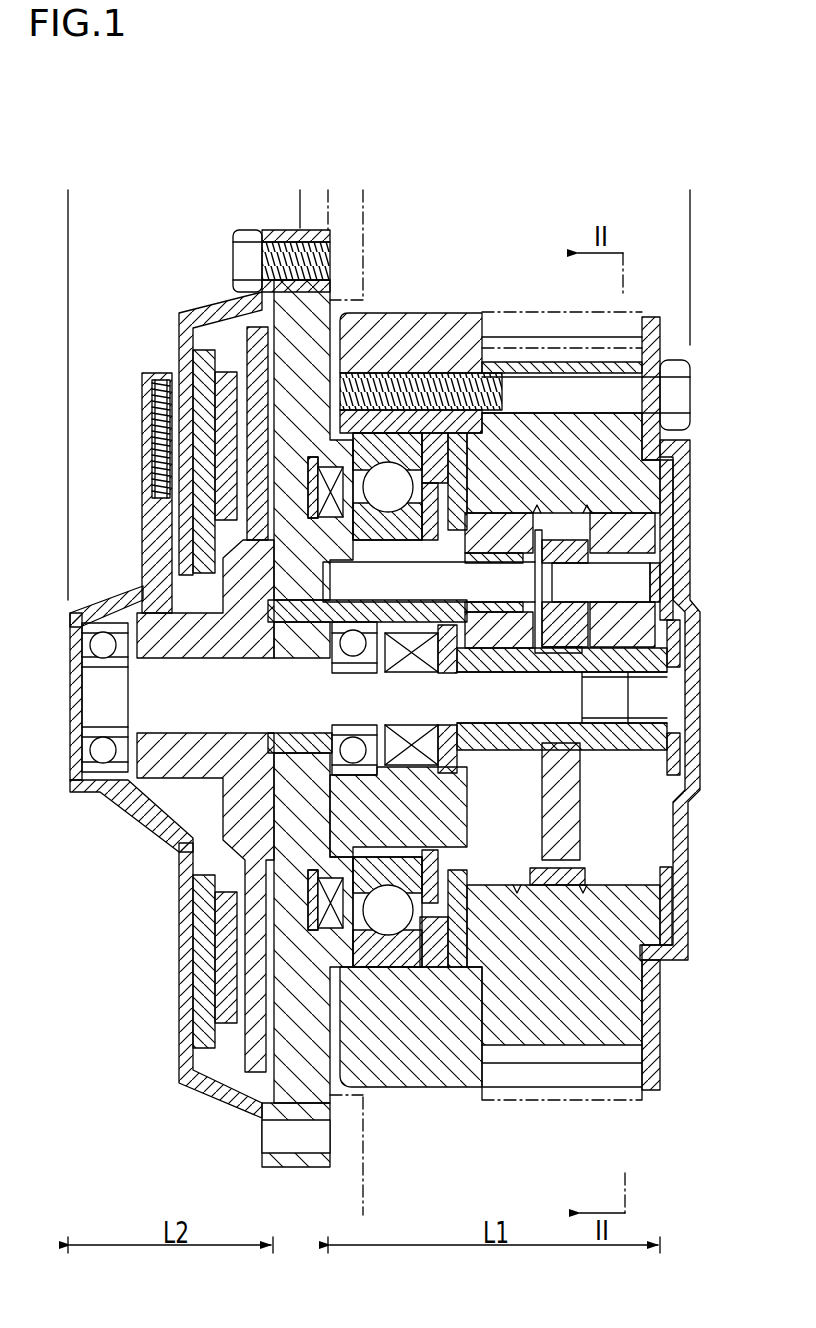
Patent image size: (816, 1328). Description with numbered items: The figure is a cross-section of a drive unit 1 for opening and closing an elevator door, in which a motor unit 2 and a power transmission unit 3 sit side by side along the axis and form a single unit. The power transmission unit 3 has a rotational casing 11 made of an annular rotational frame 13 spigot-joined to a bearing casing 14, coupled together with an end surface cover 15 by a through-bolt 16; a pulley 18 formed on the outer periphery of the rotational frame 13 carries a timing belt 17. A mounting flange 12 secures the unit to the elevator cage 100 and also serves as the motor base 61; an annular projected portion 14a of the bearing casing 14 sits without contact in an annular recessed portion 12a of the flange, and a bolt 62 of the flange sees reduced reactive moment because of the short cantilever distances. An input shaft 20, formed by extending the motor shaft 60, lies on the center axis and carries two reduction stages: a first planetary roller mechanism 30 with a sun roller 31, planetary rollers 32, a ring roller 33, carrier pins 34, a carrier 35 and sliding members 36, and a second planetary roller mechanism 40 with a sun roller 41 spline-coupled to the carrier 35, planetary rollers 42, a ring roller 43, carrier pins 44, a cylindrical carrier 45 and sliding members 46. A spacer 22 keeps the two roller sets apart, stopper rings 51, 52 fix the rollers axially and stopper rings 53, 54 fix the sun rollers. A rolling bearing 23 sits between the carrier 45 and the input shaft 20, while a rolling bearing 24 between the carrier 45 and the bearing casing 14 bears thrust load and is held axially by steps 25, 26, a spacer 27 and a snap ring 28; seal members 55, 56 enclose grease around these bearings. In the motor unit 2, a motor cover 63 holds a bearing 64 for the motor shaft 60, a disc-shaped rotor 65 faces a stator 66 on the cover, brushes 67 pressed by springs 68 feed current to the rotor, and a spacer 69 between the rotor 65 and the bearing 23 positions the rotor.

The drive unit 1 is at (515, 102).
The motor unit 2 is at (300, 175).
The power transmission unit 3 is at (690, 175).
The rotational casing 11 is at (512, 225).
The mounting flange 12 is at (293, 292).
The annular recessed portion 12a is at (310, 917).
The rotational frame 13 is at (528, 427).
The bearing casing 14 is at (407, 330).
The annular projected portion 14a is at (280, 977).
The end surface cover 15 is at (677, 450).
The through-bolt 16 is at (677, 395).
The timing belt 17 is at (637, 310).
The pulley 18 is at (557, 337).
The input shaft 20 is at (567, 703).
The spacer 22 is at (585, 872).
The rolling bearing 23 is at (353, 652).
The rolling bearing 24 is at (392, 967).
The step 25 is at (323, 547).
The step 26 is at (350, 428).
The spacer 27 is at (435, 433).
The snap ring 28 is at (430, 547).
The first planetary roller mechanism 30 is at (610, 865).
The sun roller 31 is at (620, 740).
The planetary rollers 32 is at (655, 623).
The ring roller 33 is at (630, 520).
The carrier pin 34 is at (655, 580).
The carrier 35 is at (573, 818).
The sliding member 36 is at (623, 563).
The second planetary roller mechanism 40 is at (498, 865).
The sun roller 41 is at (502, 743).
The planetary rollers 42 is at (500, 640).
The ring roller 43 is at (503, 523).
The carrier pin 44 is at (323, 593).
The carrier 45 is at (453, 817).
The sliding member 46 is at (500, 560).
The stopper ring 51 is at (673, 483).
The stopper ring 52 is at (460, 437).
The stopper ring 53 is at (680, 640).
The stopper ring 54 is at (450, 660).
The seal member 55 is at (317, 887).
The seal member 56 is at (413, 668).
The motor shaft 60 is at (207, 723).
The motor base 61 is at (290, 1092).
The bolt 62 is at (243, 262).
The motor cover 63 is at (207, 315).
The bearing 64 is at (105, 757).
The rotor 65 is at (227, 828).
The stator 66 is at (205, 1002).
The brushes 67 is at (153, 547).
The springs 68 is at (152, 415).
The spacer 69 is at (300, 747).
The elevator cage 100 is at (363, 1182).